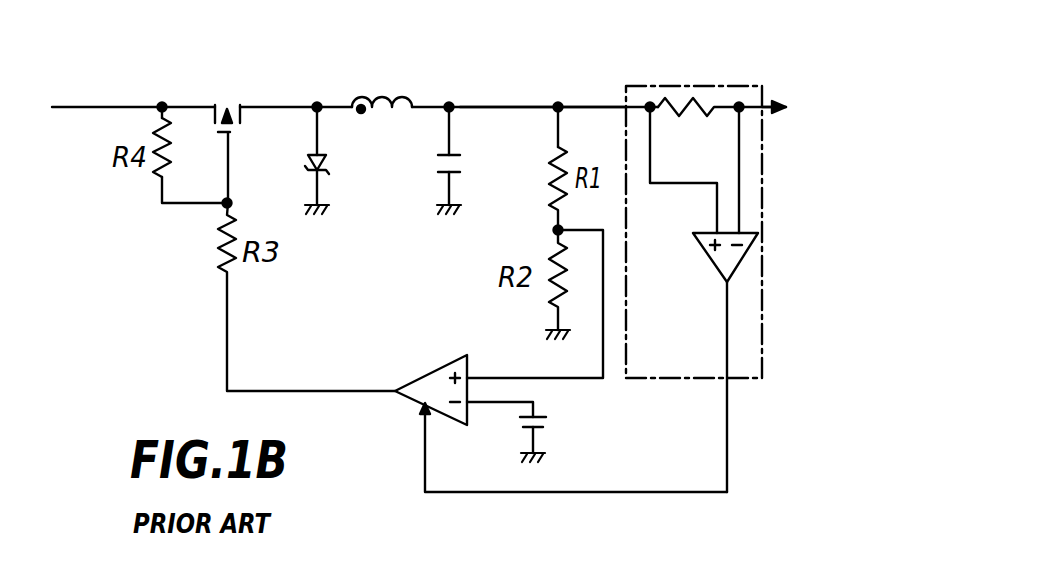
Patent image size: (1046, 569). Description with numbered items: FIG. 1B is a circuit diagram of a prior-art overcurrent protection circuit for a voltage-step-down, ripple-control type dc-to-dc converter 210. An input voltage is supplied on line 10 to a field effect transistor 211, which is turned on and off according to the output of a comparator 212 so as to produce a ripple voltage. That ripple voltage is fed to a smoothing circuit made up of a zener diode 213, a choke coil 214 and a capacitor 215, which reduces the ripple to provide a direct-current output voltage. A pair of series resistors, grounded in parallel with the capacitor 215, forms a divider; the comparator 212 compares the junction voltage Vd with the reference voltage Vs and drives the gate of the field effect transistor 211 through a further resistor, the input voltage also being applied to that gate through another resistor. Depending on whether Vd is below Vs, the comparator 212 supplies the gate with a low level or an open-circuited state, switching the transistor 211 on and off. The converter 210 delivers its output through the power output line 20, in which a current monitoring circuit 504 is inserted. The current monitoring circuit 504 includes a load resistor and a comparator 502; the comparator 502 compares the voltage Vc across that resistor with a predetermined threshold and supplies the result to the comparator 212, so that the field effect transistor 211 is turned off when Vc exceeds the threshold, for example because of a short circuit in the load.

The input voltage line 10 is at (100, 107).
The field effect transistor 211 is at (218, 107).
The comparator 212 is at (447, 362).
The zener diode 213 is at (309, 166).
The choke coil 214 is at (392, 97).
The capacitor 215 is at (449, 173).
The dc-to-dc converter 210 is at (525, 107).
The power output line 20 is at (767, 107).
The comparator 502 is at (693, 236).
The current monitoring circuit 504 is at (762, 155).